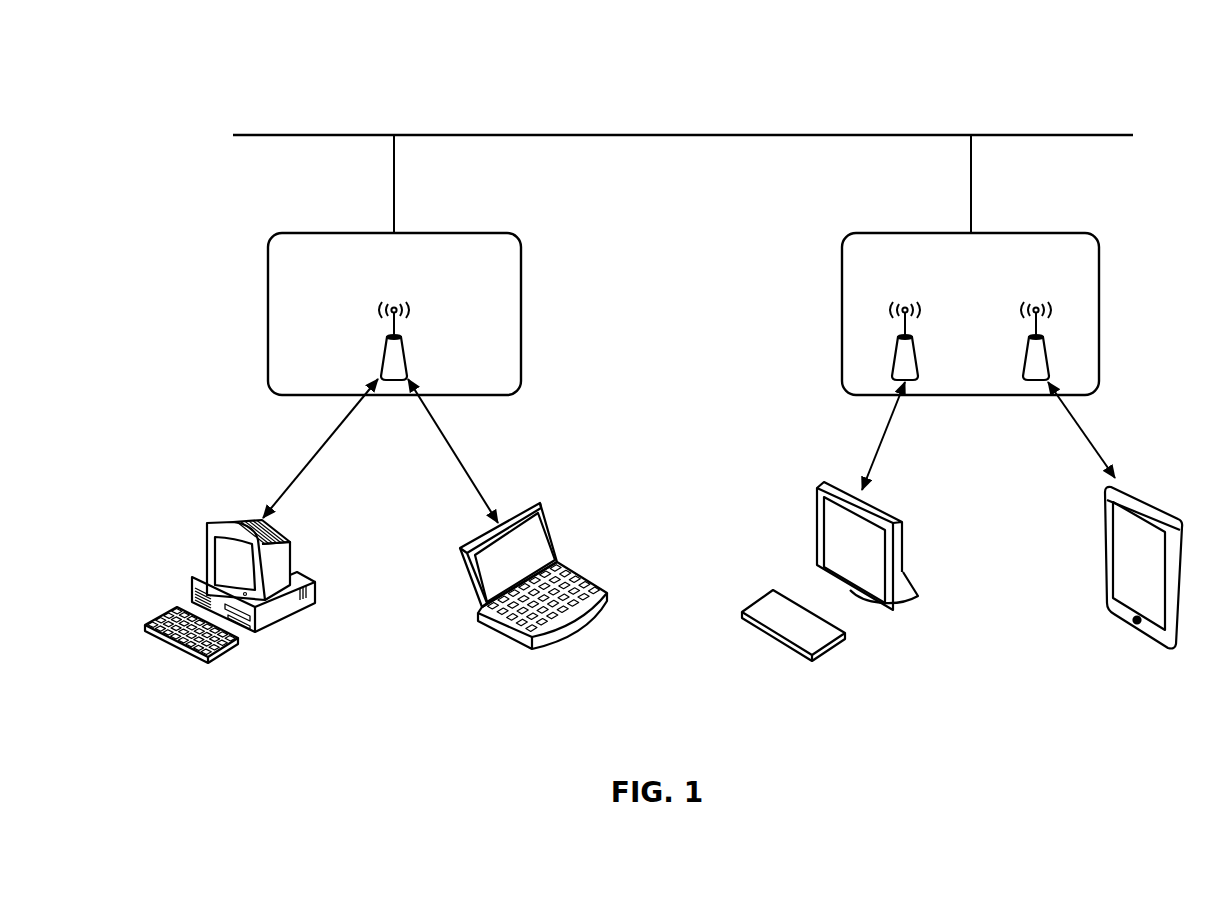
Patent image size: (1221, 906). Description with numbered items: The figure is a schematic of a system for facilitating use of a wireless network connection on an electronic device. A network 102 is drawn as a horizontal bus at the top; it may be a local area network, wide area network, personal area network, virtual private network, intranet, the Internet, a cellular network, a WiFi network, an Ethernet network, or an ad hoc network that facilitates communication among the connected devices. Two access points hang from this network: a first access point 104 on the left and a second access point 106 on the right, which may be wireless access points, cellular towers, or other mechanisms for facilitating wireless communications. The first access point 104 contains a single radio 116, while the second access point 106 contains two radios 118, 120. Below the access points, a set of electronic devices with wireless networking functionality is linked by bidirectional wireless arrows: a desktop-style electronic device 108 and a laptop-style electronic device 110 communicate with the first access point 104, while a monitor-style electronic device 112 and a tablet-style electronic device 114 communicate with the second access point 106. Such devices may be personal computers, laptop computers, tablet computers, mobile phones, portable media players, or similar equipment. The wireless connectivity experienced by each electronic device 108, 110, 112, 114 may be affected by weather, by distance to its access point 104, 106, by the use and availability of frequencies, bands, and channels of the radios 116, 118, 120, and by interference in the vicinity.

The network 102 is at (512, 135).
The access point 104 is at (378, 264).
The access point 106 is at (954, 264).
The electronic device 108 is at (237, 617).
The electronic device 110 is at (532, 603).
The electronic device 112 is at (843, 591).
The electronic device 114 is at (1115, 588).
The radio 116 is at (397, 362).
The radio 118 is at (902, 360).
The radio 120 is at (1042, 360).